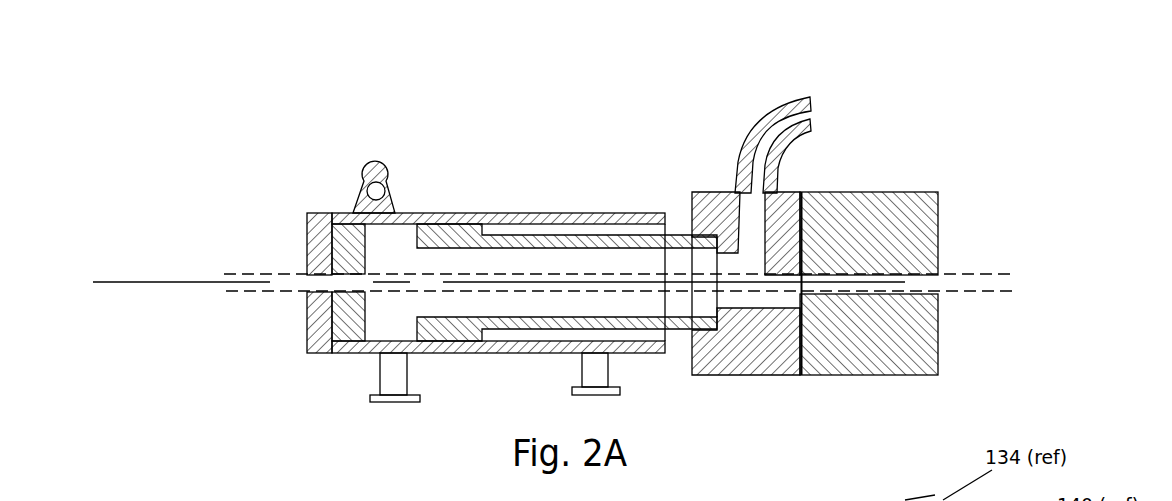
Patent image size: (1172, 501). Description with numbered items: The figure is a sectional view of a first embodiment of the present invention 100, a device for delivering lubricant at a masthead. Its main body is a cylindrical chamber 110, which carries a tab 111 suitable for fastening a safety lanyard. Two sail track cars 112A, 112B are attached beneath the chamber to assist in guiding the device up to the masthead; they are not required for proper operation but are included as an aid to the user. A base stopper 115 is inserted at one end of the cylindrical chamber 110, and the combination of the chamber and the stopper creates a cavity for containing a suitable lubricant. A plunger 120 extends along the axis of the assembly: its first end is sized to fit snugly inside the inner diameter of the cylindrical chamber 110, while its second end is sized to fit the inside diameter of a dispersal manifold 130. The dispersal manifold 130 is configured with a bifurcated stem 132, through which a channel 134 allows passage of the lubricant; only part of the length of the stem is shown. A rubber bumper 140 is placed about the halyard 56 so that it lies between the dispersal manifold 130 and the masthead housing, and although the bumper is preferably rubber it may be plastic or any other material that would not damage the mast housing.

The first embodiment of the present invention 100 is at (1048, 128).
The halyard 56 is at (995, 284).
The cylindrical chamber 110 is at (420, 213).
The tab 111 is at (365, 183).
The sail track car 112A is at (392, 372).
The sail track car 112B is at (598, 365).
The base stopper 115 is at (318, 240).
The plunger 120 is at (458, 232).
The dispersal manifold 130 is at (697, 196).
The bifurcated stem 132 is at (753, 137).
The channel 134 is at (790, 123).
The rubber bumper 140 is at (923, 233).